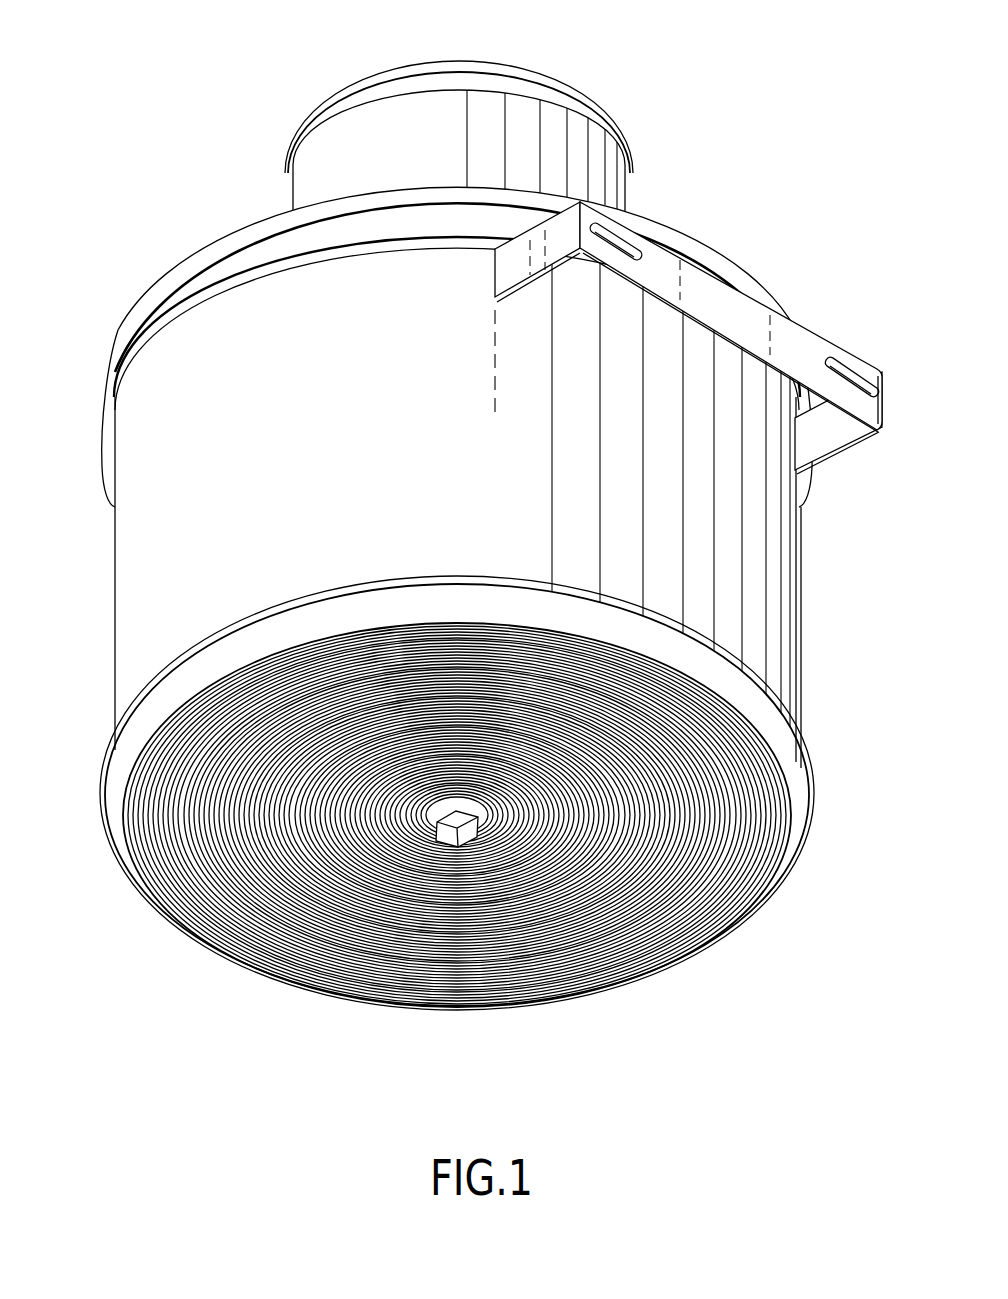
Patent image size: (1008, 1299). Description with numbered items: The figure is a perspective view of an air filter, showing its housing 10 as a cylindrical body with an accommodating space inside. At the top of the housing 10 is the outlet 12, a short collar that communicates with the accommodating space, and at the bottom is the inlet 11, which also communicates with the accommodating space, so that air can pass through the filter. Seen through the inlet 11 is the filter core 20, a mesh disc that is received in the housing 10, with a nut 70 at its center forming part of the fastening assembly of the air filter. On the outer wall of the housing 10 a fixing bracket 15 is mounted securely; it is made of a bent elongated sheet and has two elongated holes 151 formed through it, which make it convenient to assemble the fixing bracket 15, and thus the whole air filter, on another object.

The housing 10 is at (104, 536).
The inlet 11 is at (448, 1020).
The outlet 12 is at (543, 58).
The fixing bracket 15 is at (820, 308).
The elongated holes 151 is at (627, 245).
The filter core 20 is at (590, 1004).
The nut 70 is at (472, 838).